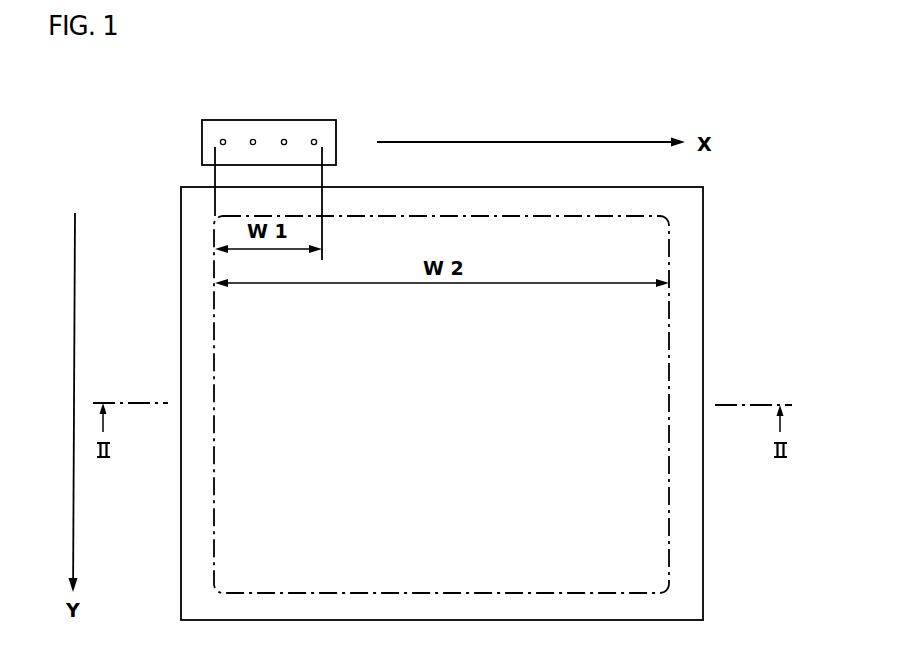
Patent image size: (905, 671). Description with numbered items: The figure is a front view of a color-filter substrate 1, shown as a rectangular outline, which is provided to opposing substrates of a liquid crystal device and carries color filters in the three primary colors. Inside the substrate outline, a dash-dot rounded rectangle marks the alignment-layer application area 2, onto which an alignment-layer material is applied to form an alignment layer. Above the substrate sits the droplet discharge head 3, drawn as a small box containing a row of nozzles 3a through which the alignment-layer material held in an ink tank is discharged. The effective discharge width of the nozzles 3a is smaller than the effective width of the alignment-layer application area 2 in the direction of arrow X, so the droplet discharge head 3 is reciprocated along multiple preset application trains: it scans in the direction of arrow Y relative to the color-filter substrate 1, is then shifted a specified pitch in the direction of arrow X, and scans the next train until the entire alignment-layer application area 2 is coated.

The color-filter substrate 1 is at (702, 565).
The alignment-layer application area 2 is at (668, 502).
The droplet discharge head 3 is at (202, 145).
The nozzles 3a is at (314, 139).